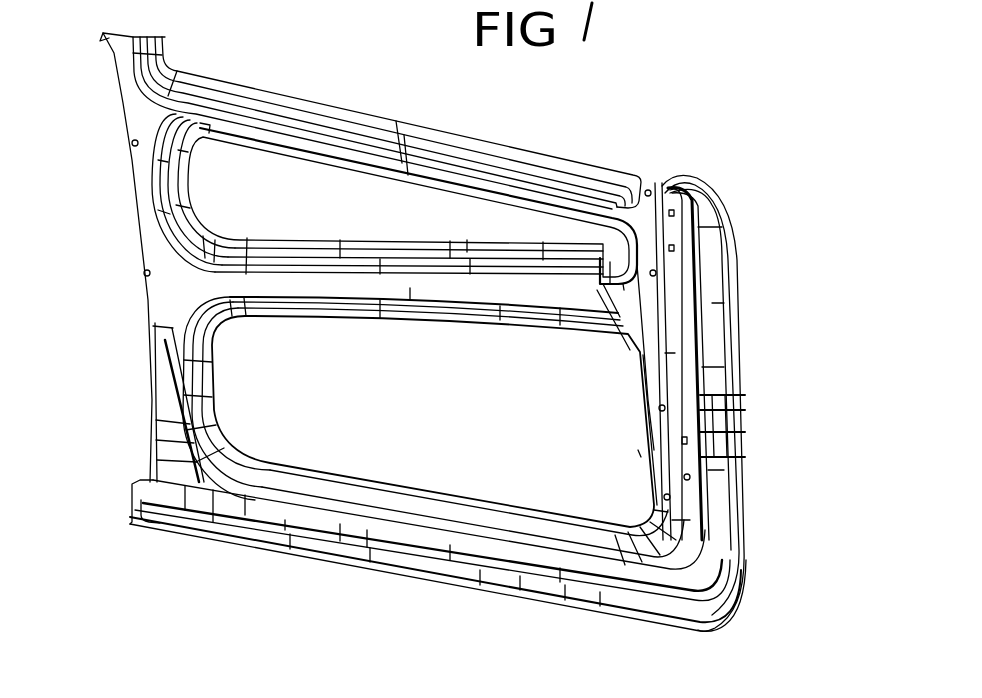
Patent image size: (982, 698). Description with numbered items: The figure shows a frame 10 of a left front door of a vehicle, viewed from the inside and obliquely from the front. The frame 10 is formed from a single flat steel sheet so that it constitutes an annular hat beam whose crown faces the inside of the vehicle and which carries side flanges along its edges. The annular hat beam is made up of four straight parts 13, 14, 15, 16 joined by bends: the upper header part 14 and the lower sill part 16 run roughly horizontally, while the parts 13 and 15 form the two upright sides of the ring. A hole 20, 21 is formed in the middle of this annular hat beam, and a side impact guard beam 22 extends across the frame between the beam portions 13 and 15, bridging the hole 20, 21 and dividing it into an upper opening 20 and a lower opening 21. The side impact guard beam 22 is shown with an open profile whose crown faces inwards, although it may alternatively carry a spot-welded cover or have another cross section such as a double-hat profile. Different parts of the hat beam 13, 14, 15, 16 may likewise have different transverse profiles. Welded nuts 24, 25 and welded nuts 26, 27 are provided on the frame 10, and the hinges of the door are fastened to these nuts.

The frame 10 is at (666, 123).
The straight part of the hat beam 13 is at (657, 385).
The straight part of the hat beam 14 is at (244, 116).
The straight part of the hat beam 15 is at (172, 376).
The straight part of the hat beam 16 is at (280, 512).
The hole 20 is at (298, 214).
The hole 21 is at (336, 408).
The side impact guard beam 22 is at (493, 293).
The welded nut 24 is at (672, 213).
The welded nut 25 is at (672, 248).
The welded nut 26 is at (686, 440).
The welded nut 27 is at (690, 477).